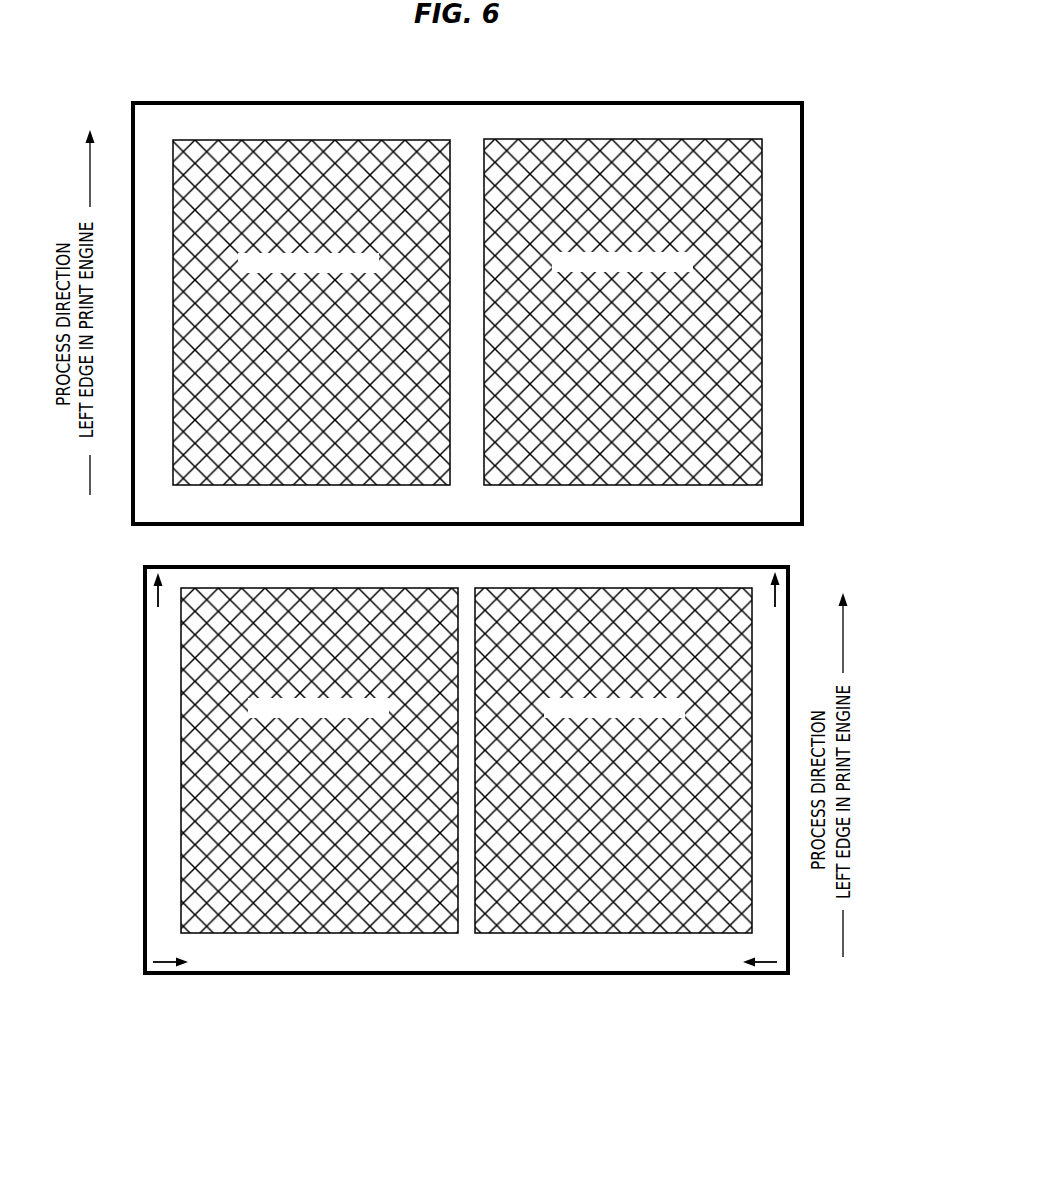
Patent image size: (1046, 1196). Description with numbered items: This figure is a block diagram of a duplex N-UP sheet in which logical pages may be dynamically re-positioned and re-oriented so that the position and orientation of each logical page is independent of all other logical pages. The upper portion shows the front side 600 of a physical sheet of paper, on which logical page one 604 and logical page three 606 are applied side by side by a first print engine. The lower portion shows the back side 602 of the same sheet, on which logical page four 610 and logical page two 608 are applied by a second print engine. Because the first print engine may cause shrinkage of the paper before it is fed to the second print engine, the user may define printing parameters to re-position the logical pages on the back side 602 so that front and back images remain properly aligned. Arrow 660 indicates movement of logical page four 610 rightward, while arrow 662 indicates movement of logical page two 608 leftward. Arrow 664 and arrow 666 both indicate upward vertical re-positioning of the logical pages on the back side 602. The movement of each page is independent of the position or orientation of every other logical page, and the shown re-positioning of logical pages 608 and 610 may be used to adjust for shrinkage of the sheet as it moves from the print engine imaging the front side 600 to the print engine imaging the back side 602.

The front side 600 is at (593, 516).
The back side 602 is at (592, 964).
The logical page 1 604 is at (327, 358).
The logical page 3 606 is at (639, 358).
The logical page 2 608 is at (631, 806).
The logical page 4 610 is at (335, 806).
The arrow 660 is at (162, 968).
The arrow 662 is at (763, 968).
The arrow 664 is at (146, 595).
The arrow 666 is at (777, 592).